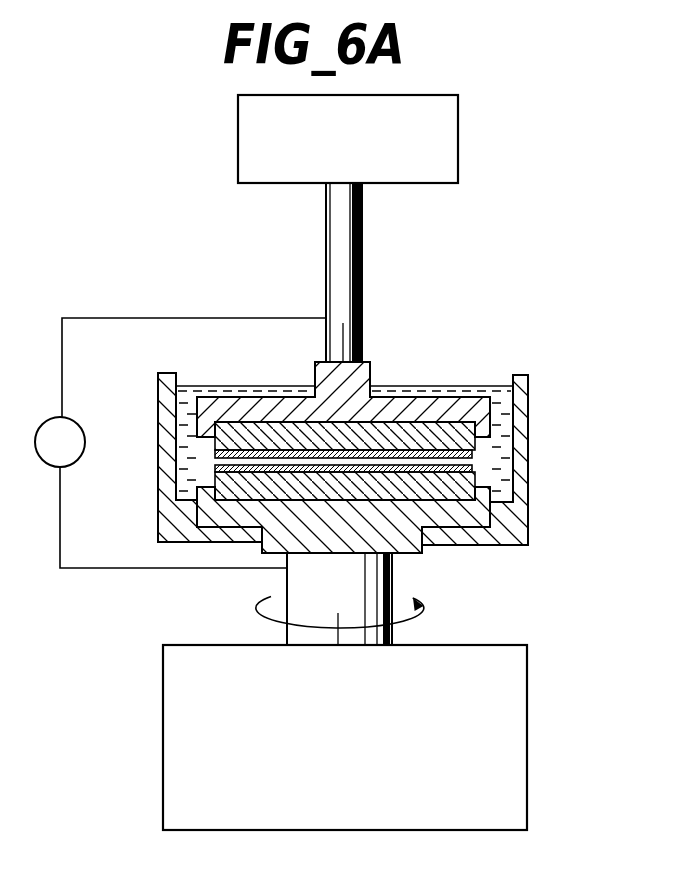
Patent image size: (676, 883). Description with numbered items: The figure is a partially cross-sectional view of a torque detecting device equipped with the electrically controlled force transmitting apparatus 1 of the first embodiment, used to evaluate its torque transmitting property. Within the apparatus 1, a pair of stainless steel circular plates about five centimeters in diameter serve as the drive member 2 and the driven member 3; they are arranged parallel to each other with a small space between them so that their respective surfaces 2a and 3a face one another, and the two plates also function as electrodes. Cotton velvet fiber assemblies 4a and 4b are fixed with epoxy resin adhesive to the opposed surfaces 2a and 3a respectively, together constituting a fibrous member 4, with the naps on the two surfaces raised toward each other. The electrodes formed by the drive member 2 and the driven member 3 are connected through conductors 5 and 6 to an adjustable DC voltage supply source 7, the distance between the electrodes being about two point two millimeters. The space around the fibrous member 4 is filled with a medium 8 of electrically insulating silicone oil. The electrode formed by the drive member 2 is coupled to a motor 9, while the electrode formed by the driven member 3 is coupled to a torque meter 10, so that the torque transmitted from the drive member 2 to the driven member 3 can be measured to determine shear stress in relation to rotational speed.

The electrically controlled force transmitting apparatus 1 is at (488, 377).
The drive member 2 is at (470, 497).
The surface of drive member 2a is at (444, 476).
The driven member 3 is at (430, 430).
The surface of driven member 3a is at (382, 452).
The fibrous member 4 is at (312, 481).
The fiber assembly 4a is at (250, 472).
The fiber assembly 4b is at (250, 468).
The conductor 5 is at (98, 568).
The conductor 6 is at (122, 318).
The adjustable DC voltage supply source 7 is at (72, 425).
The medium 8 is at (185, 453).
The motor 9 is at (527, 740).
The torque meter 10 is at (458, 135).